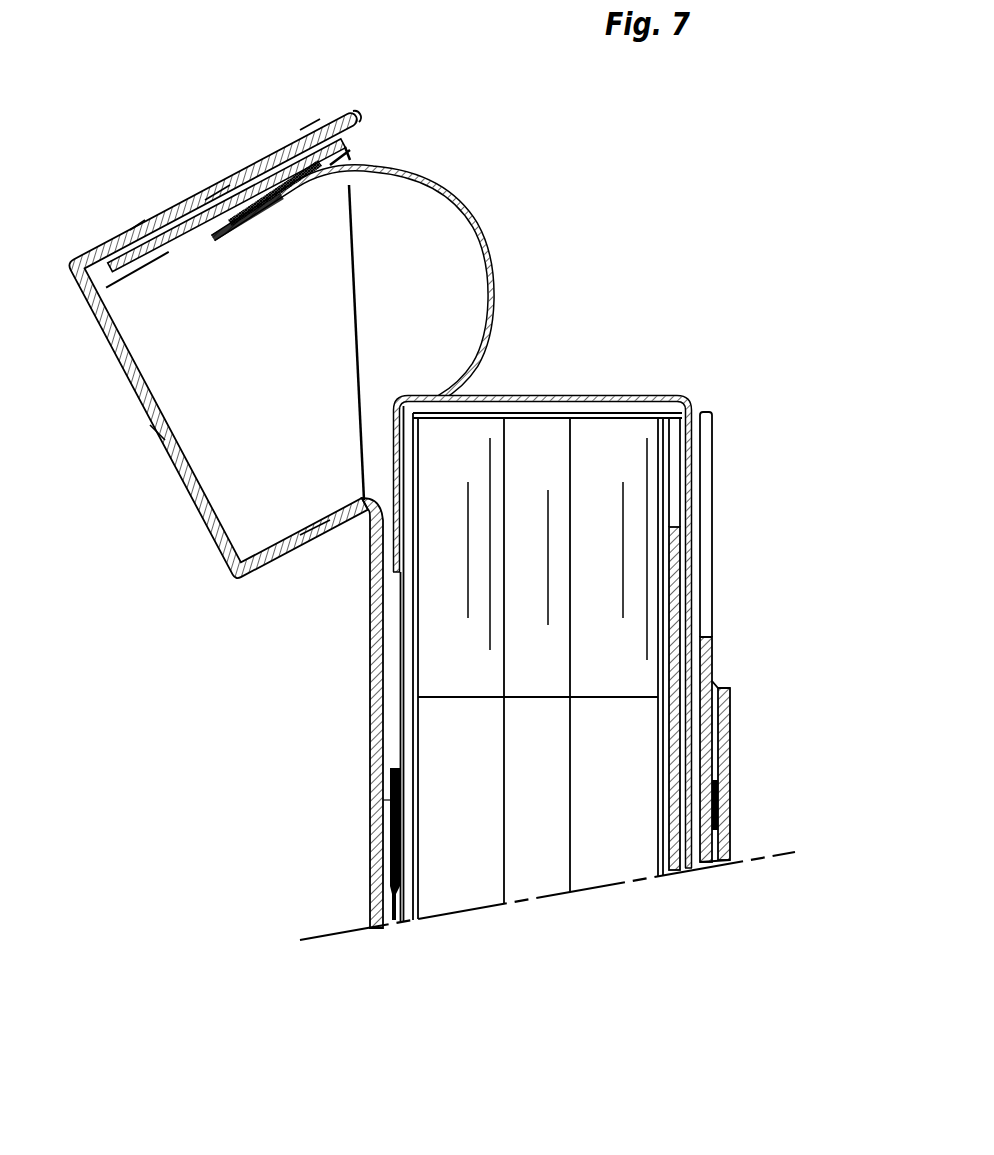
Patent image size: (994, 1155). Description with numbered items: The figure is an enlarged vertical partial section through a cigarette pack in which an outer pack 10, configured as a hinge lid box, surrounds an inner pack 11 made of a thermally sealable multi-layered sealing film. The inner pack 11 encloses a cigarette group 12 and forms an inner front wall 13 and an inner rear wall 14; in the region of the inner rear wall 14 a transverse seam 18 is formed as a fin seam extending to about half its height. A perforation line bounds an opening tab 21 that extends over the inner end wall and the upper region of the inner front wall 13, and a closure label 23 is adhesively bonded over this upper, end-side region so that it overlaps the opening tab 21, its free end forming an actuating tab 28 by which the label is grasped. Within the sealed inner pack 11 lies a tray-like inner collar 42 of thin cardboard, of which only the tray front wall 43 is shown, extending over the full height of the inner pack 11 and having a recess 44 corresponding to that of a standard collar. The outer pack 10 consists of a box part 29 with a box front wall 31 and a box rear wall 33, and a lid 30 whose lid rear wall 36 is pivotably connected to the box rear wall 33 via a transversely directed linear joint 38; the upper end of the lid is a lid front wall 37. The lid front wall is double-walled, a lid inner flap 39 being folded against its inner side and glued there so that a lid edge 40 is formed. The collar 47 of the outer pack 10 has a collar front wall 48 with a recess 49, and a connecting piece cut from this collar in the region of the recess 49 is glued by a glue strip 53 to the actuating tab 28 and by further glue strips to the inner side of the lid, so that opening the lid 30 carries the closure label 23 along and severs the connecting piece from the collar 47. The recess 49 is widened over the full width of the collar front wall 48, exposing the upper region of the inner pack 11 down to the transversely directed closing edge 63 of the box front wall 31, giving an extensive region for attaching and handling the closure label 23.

The outer pack 10 is at (186, 714).
The inner pack 11 is at (691, 320).
The cigarette group 12 is at (568, 400).
The inner front wall 13 is at (689, 597).
The inner rear wall 14 is at (406, 702).
The transverse seam 18 is at (392, 826).
The opening tab 21 is at (462, 198).
The closure label 23 is at (486, 296).
The actuating tab 28 is at (295, 213).
The box part 29 is at (275, 813).
The lid 30 is at (145, 518).
The box front wall 31 is at (731, 767).
The box rear wall 33 is at (371, 876).
The lid rear wall 36 is at (311, 528).
The lid front wall 37 is at (158, 432).
The linear joint 38 is at (364, 519).
The lid inner flap 39 is at (140, 223).
The lid edge 40 is at (352, 116).
The inner collar 42 is at (672, 891).
The tray front wall 43 is at (678, 572).
The recess 44 is at (674, 526).
The collar 47 is at (722, 654).
The collar front wall 48 is at (712, 728).
The recess 49 is at (704, 638).
The glue strip 53 is at (240, 231).
The closing edge 63 is at (721, 686).